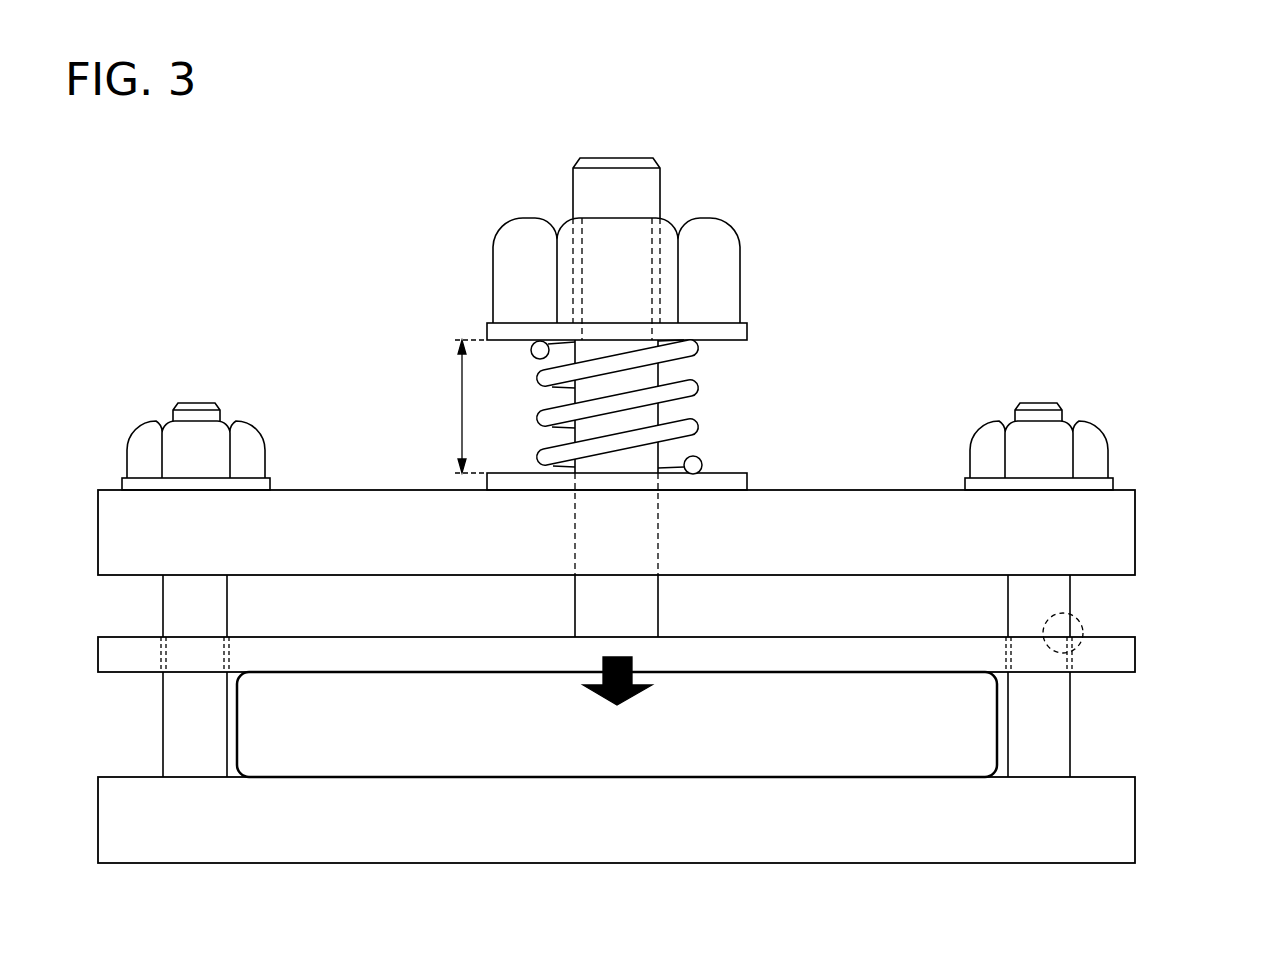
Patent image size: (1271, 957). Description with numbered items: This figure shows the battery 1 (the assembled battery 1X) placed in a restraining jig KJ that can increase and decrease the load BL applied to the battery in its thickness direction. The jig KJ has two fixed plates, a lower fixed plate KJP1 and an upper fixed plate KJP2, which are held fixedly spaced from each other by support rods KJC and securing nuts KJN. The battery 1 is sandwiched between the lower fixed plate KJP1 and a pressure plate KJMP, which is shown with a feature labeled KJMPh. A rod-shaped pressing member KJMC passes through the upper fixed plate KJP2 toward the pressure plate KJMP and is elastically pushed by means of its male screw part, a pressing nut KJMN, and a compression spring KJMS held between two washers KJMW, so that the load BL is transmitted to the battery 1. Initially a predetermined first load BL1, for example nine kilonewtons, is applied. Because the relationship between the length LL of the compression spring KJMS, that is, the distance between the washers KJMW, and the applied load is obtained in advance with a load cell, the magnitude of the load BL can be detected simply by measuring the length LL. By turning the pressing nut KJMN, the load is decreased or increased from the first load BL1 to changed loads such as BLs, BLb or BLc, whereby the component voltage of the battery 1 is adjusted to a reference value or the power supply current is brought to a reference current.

The restraining jig KJ is at (270, 310).
The rod-shaped pressing member KJMC is at (640, 188).
The pressing nut KJMN is at (727, 240).
The washers KJMW is at (745, 330).
The compression spring KJMS is at (702, 383).
The securing nuts KJN is at (1092, 430).
The upper fixed plate KJP2 is at (1118, 545).
The pressure plate KJMP is at (767, 645).
The hole of pressing plate KJMPh is at (1083, 620).
The lower fixed plate KJP1 is at (1107, 823).
The support rods KJC is at (180, 727).
The length of the compression spring LL is at (457, 406).
The assembled battery 1X is at (617, 724).
The battery 1 is at (617, 724).
The load BL is at (619, 697).
The first load BL1 is at (619, 697).
The layer BLs is at (619, 697).
The changed load BLb is at (619, 697).
The changed load BLc is at (619, 697).